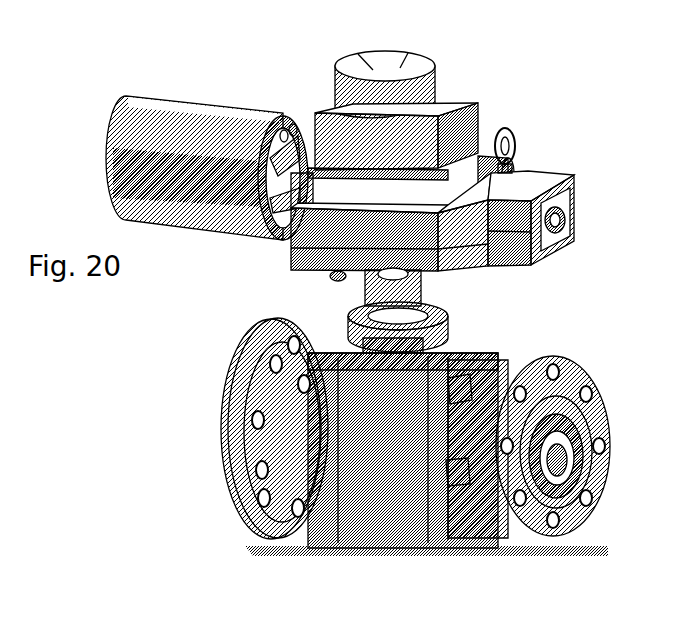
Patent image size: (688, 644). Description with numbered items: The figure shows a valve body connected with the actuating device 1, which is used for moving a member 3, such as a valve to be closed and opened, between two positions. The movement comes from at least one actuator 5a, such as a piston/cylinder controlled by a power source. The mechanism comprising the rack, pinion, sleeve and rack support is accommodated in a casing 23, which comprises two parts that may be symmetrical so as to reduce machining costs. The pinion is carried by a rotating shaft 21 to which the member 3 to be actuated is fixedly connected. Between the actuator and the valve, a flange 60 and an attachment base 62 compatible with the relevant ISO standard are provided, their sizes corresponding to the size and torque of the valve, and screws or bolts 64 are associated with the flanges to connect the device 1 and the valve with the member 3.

The actuator 5a is at (183, 98).
The device 1 is at (270, 258).
The flange 60 is at (437, 268).
The casing 23 is at (546, 162).
The rotating shaft 21 is at (357, 291).
The attachment base 62 is at (445, 312).
The member 3 is at (258, 556).
The screws or bolts 64 is at (452, 298).